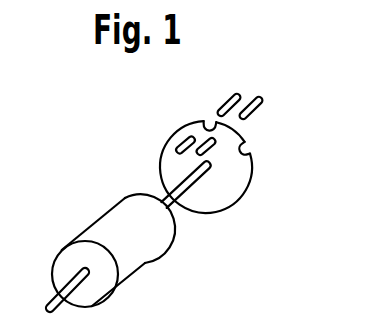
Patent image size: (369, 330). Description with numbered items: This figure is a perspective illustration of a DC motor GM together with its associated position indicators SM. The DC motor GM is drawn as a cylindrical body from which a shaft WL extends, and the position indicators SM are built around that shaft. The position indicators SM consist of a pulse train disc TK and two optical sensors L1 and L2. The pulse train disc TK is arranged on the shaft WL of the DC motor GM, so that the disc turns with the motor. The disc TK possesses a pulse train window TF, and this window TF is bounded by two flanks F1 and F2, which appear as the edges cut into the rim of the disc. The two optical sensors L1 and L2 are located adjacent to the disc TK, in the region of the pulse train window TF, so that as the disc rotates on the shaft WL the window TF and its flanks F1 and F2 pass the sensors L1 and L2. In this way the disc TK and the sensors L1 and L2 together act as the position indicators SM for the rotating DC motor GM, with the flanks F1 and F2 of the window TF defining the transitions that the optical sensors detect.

The position indicators SM is at (140, 166).
The DC motor GM is at (141, 262).
The shaft WL is at (195, 180).
The pulse train disc TK is at (240, 178).
The pulse train window TF is at (237, 137).
The first flank F1 is at (247, 147).
The second flank F2 is at (207, 121).
The first optical sensor L1 is at (238, 93).
The second optical sensor L2 is at (263, 98).